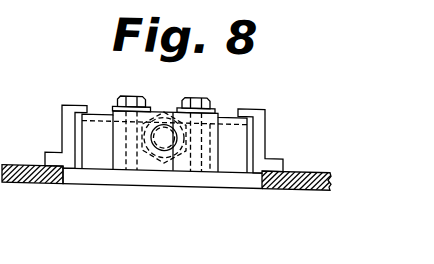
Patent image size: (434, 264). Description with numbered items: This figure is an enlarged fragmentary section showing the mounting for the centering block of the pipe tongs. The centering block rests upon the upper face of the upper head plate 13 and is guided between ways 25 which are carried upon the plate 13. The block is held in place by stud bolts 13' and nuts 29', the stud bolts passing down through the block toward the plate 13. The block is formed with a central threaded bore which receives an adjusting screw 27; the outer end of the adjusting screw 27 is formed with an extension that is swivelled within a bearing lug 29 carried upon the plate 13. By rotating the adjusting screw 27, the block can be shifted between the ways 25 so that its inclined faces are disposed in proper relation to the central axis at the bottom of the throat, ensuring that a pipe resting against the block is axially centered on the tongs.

The upper head plate 13 is at (173, 163).
The stud bolts 13' is at (147, 89).
The ways 25 is at (62, 114).
The adjusting screw 27 is at (168, 136).
The bearing lug 29 is at (222, 122).
The nuts 29' is at (118, 122).